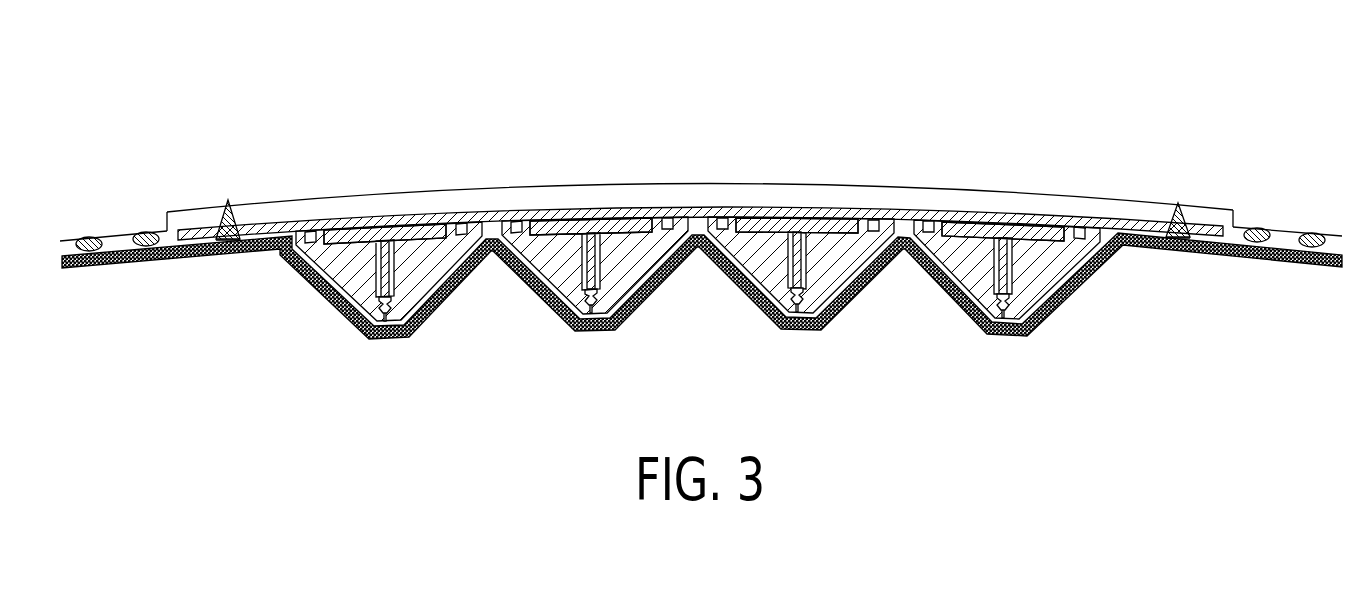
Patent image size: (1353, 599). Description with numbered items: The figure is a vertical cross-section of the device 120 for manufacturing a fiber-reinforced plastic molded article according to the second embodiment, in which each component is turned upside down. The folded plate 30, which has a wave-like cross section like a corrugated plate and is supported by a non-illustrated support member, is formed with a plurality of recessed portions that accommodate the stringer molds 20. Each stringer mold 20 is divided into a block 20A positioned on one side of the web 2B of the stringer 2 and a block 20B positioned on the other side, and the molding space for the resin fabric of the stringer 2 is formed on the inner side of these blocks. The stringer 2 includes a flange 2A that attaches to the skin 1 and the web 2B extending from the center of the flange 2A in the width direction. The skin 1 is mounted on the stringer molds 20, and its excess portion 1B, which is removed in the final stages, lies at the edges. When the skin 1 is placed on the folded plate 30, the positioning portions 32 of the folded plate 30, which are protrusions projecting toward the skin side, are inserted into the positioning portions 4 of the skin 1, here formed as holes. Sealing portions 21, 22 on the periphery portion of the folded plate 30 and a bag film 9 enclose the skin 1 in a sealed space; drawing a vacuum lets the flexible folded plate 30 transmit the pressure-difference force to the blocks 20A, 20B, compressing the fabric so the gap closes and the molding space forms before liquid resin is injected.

The skin 1 is at (596, 207).
The excess portion 1B is at (193, 228).
The stringer 2 is at (403, 279).
The flange 2A is at (318, 277).
The web 2B is at (355, 323).
The positioning portions 4 is at (224, 243).
The bag film 9 is at (397, 194).
The stringer mold 20 is at (1081, 265).
The block 20A is at (1043, 291).
The block 20B is at (958, 296).
The sealing portion 21 is at (146, 231).
The sealing portion 22 is at (90, 236).
The folded plate 30 is at (837, 324).
The positioning portions 32 is at (221, 219).
The device for manufacturing a fiber-reinforced plastic molded article 120 is at (1041, 111).